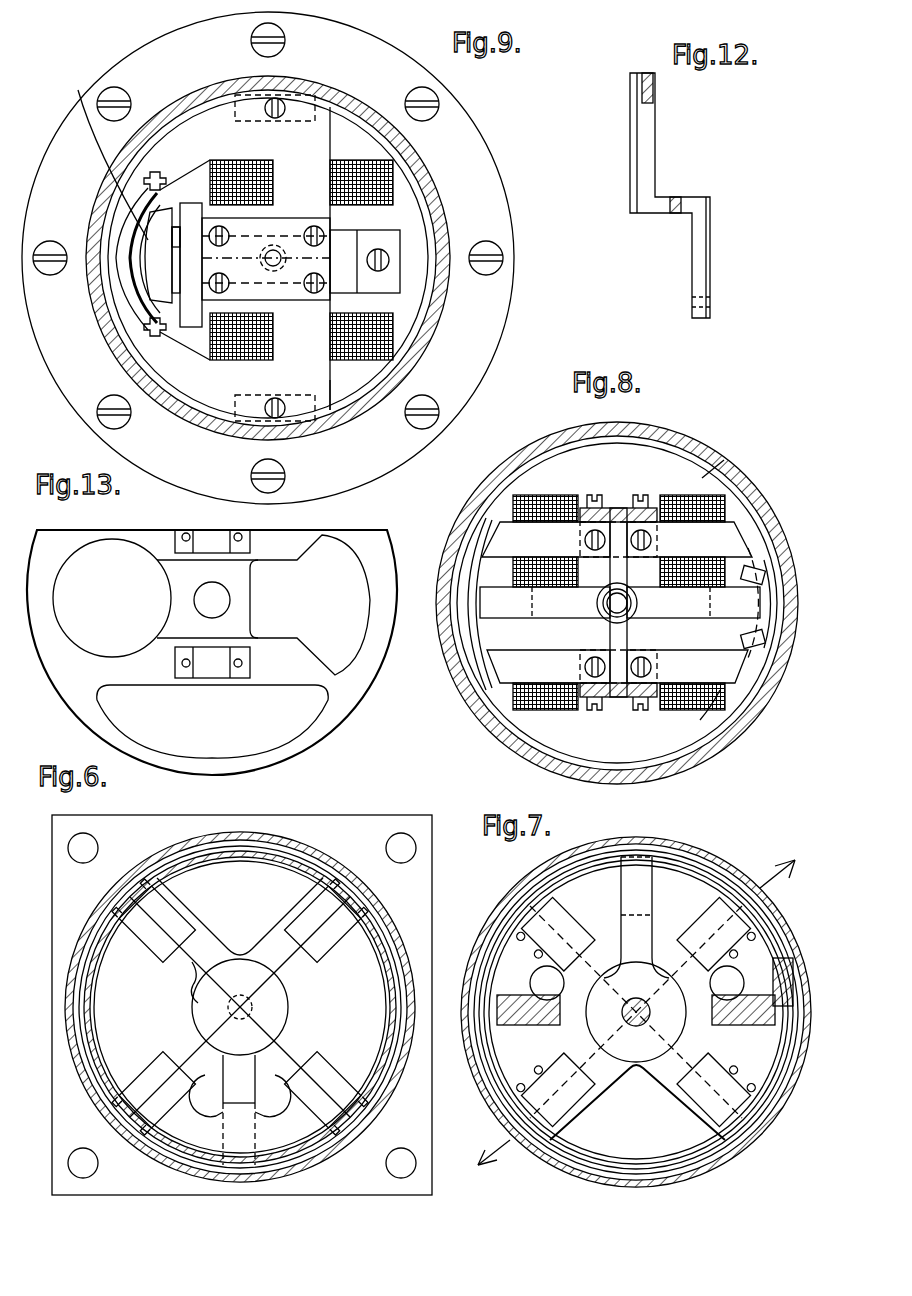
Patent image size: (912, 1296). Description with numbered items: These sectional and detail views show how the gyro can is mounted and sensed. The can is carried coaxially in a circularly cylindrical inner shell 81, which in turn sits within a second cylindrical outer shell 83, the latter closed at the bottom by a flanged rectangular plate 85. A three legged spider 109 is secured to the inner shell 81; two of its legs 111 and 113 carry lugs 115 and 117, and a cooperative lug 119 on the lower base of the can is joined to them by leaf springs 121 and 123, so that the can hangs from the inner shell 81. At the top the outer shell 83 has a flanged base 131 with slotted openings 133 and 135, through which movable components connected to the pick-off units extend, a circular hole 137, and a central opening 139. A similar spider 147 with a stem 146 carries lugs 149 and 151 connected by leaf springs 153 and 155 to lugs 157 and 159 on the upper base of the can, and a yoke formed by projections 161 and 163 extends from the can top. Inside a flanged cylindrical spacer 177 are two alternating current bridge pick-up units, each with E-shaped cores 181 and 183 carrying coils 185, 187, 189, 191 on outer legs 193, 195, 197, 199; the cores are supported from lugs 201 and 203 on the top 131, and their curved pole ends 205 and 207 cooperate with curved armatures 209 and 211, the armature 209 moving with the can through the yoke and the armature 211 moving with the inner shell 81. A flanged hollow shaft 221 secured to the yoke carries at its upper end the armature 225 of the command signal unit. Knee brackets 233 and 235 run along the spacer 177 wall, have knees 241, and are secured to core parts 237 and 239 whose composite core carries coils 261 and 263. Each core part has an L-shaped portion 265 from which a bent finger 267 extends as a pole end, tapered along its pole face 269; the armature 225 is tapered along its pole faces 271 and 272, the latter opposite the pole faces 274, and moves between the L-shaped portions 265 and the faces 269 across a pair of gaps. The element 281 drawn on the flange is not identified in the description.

In FIG. 6, the inner shell 81 is at (318, 865).
In FIG. 7, the inner shell 81 is at (676, 858).
In FIG. 6, the outer shell 83 is at (300, 850).
In FIG. 7, the outer shell 83 is at (700, 858).
In FIG. 6, the flanged rectangular plate 85 is at (158, 828).
In FIG. 6, the three legged spider 109 is at (240, 943).
In FIG. 6, the leg 111 is at (205, 940).
In FIG. 6, the leg 113 is at (272, 940).
In FIG. 6, the lug 115 is at (178, 900).
In FIG. 6, the lug 117 is at (312, 955).
In FIG. 6, the cooperative lug 119 is at (272, 1112).
In FIG. 6, the leaf spring 121 is at (190, 972).
In FIG. 6, the leaf spring 123 is at (198, 1052).
In FIG. 13, the flanged base 131 is at (82, 680).
In FIG. 8, the slotted opening 133 is at (728, 492).
In FIG. 13, the slotted opening 133 is at (270, 740).
In FIG. 8, the slotted opening 135 is at (740, 712).
In FIG. 13, the slotted opening 135 is at (363, 622).
In FIG. 8, the circular hole 137 is at (478, 560).
In FIG. 13, the circular hole 137 is at (86, 542).
In FIG. 13, the central opening 139 is at (196, 600).
In FIG. 7, the stem 146 is at (630, 998).
In FIG. 7, the spider 147 is at (632, 1068).
In FIG. 7, the lug 149 is at (578, 1115).
In FIG. 7, the lug 151 is at (692, 1108).
In FIG. 7, the leaf spring 153 is at (583, 970).
In FIG. 7, the leaf spring 155 is at (690, 970).
In FIG. 7, the lug 157 is at (575, 923).
In FIG. 7, the lug 159 is at (698, 923).
In FIG. 7, the projection 161 is at (528, 999).
In FIG. 7, the projection 163 is at (743, 999).
In FIG. 8, the flanged cylindrical spacer 177 is at (672, 438).
In FIG. 8, the E-shaped core 181 is at (566, 535).
In FIG. 8, the E-shaped core 183 is at (668, 535).
In FIG. 8, the coil 185 is at (498, 512).
In FIG. 8, the coil 187 is at (530, 710).
In FIG. 8, the coil 189 is at (738, 512).
In FIG. 8, the coil 191 is at (708, 710).
In FIG. 8, the outer leg 193 is at (546, 539).
In FIG. 8, the outer leg 195 is at (548, 666).
In FIG. 8, the outer leg 197 is at (689, 539).
In FIG. 8, the outer leg 199 is at (687, 666).
In FIG. 8, the lug 201 is at (625, 690).
In FIG. 13, the lug 201 is at (208, 672).
In FIG. 8, the lug 203 is at (620, 530).
In FIG. 13, the lug 203 is at (208, 542).
In FIG. 8, the pole end 205 is at (490, 535).
In FIG. 8, the pole end 207 is at (760, 540).
In FIG. 8, the curved armature 209 is at (470, 632).
In FIG. 8, the curved armature 211 is at (770, 630).
In FIG. 8, the flanged hollow shaft 221 is at (597, 603).
In FIG. 9, the armature 225 is at (140, 240).
In FIG. 9, the knee bracket 233 is at (318, 88).
In FIG. 12, the knee bracket 233 is at (656, 145).
In FIG. 9, the knee bracket 235 is at (232, 418).
In FIG. 9, the core part 237 is at (318, 142).
In FIG. 9, the core part 239 is at (318, 385).
In FIG. 12, the knee 241 is at (660, 196).
In FIG. 9, the coil 261 is at (368, 190).
In FIG. 9, the coil 263 is at (385, 318).
In FIG. 9, the L-shaped portion 265 is at (200, 200).
In FIG. 9, the finger 267 is at (178, 132).
In FIG. 9, the pole face 269 is at (135, 200).
In FIG. 9, the pole face 271 is at (142, 232).
In FIG. 9, the pole face 272 is at (178, 224).
In FIG. 9, the pole face 274 is at (165, 265).
In FIG. 9, the flange 281 is at (435, 190).